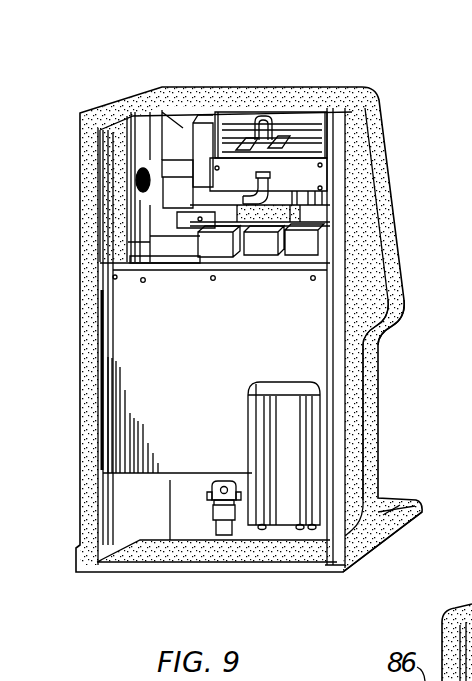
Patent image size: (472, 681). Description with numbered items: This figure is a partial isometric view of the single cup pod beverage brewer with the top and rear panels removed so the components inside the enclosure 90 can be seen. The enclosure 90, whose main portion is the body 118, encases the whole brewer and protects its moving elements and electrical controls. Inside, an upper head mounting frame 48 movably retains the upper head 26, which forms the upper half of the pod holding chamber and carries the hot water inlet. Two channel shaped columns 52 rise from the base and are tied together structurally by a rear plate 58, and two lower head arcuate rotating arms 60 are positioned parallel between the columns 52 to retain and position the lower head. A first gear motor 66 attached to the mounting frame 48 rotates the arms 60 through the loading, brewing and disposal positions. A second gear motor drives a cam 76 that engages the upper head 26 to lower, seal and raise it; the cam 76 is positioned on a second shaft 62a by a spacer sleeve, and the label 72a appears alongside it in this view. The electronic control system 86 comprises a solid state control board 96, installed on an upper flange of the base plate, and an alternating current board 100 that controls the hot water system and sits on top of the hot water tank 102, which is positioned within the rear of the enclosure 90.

The upper head 26 is at (233, 157).
The upper head mounting frame 48 is at (185, 135).
The channel shaped columns 52 is at (213, 155).
The rear plate 58 is at (333, 176).
The lower head arcuate rotating arms 60 is at (323, 265).
The second shaft 62a is at (297, 157).
The module 72a is at (297, 157).
The first gear motor 66 is at (128, 238).
The cam 76 is at (272, 157).
The electronic control system 86 is at (73, 190).
The enclosure 90 is at (391, 452).
The solid state control board 96 is at (128, 242).
The alternating current board 100 is at (253, 265).
The hot water tank 102 is at (248, 433).
The body 118 is at (367, 546).